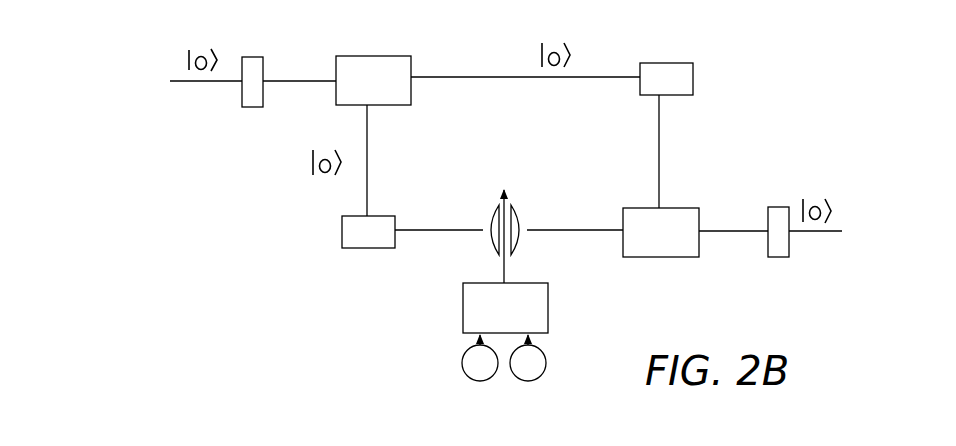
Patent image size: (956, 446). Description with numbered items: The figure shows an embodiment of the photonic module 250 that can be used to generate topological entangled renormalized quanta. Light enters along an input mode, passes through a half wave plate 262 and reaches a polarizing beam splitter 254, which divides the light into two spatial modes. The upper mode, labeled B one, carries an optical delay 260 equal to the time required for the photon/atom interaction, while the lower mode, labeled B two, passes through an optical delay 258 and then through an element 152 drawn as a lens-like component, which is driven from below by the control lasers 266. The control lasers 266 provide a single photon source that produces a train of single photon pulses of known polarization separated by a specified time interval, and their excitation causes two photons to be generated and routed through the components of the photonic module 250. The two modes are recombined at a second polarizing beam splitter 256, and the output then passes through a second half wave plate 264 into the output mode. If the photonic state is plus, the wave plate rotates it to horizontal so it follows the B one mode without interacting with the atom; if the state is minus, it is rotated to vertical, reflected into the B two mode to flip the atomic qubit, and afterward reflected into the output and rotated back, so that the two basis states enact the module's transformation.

The photonic module 250 is at (147, 72).
The half wave plate 262 is at (247, 108).
The polarizing beam splitter 254 is at (390, 88).
The optical delay 260 is at (689, 90).
The optical delay 258 is at (388, 245).
The polarizing beam splitter 256 is at (678, 245).
The half wave plate 264 is at (780, 250).
The phase shifter / modulator 152 is at (483, 213).
The control lasers 266 is at (525, 318).